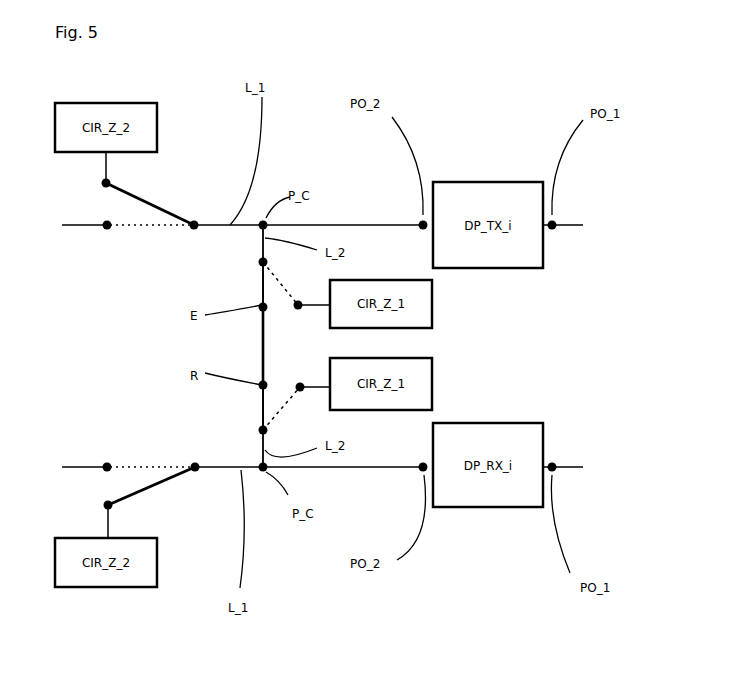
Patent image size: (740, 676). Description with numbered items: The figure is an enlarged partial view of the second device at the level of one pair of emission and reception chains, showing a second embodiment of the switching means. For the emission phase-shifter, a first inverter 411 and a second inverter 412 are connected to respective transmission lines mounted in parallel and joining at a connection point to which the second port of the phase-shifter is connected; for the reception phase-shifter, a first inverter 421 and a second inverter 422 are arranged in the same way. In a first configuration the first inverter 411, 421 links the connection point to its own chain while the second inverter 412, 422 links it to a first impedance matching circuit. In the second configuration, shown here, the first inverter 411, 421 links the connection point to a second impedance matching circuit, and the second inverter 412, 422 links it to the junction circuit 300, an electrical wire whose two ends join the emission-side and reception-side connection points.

The junction circuit 300 is at (262, 347).
The first inverter 411 is at (163, 225).
The second inverter 412 is at (262, 292).
The first inverter 421 is at (128, 498).
The second inverter 422 is at (262, 395).